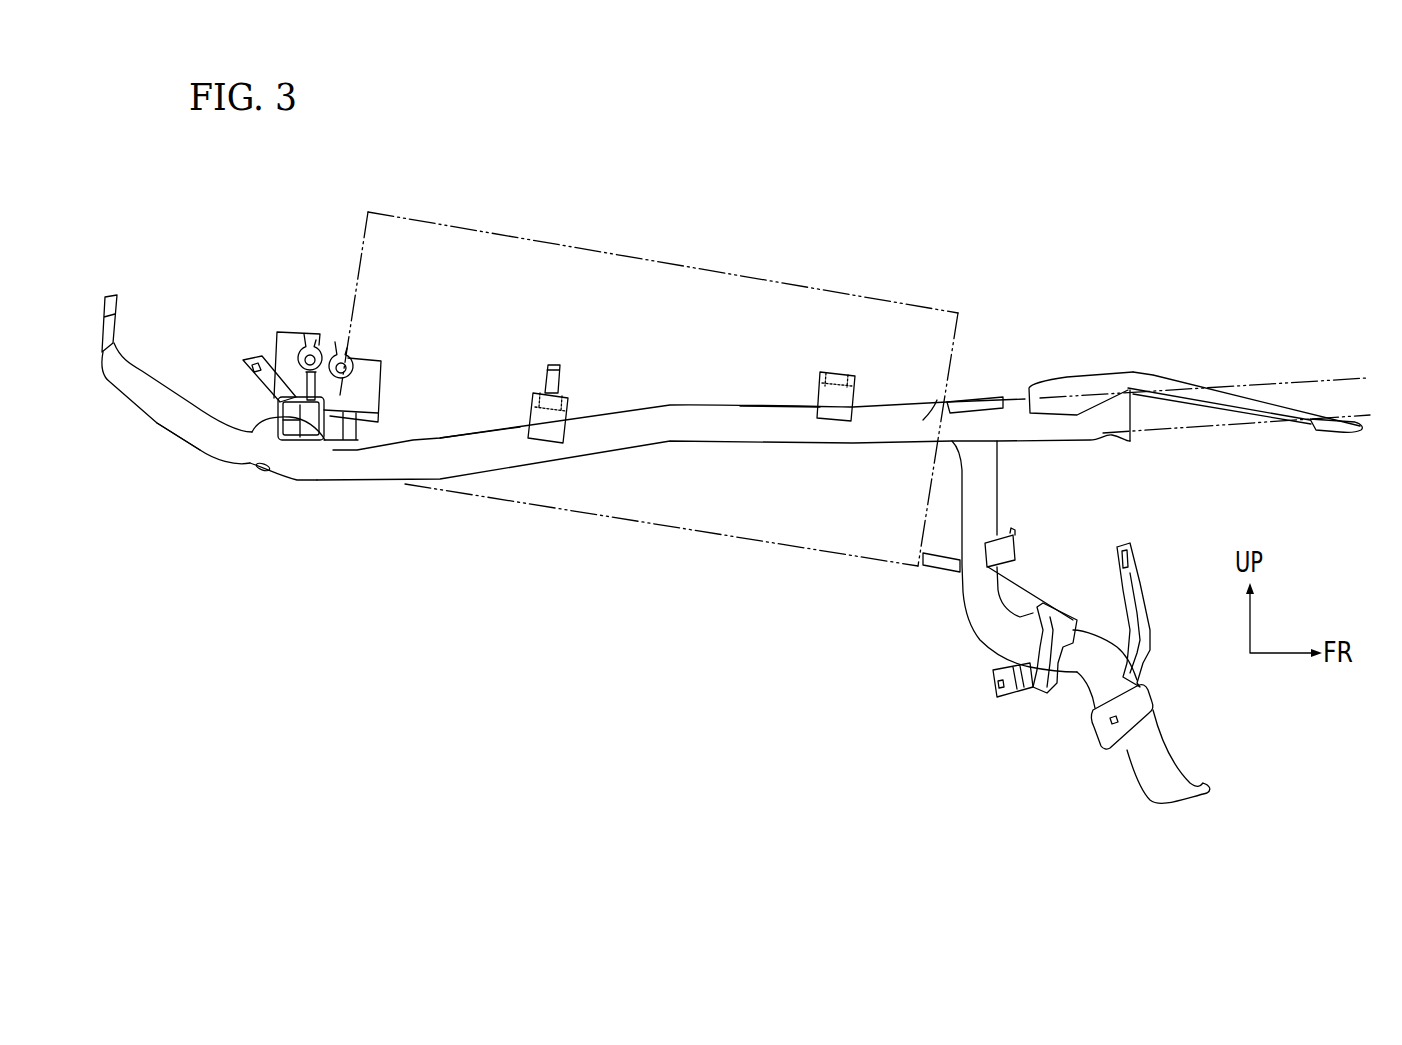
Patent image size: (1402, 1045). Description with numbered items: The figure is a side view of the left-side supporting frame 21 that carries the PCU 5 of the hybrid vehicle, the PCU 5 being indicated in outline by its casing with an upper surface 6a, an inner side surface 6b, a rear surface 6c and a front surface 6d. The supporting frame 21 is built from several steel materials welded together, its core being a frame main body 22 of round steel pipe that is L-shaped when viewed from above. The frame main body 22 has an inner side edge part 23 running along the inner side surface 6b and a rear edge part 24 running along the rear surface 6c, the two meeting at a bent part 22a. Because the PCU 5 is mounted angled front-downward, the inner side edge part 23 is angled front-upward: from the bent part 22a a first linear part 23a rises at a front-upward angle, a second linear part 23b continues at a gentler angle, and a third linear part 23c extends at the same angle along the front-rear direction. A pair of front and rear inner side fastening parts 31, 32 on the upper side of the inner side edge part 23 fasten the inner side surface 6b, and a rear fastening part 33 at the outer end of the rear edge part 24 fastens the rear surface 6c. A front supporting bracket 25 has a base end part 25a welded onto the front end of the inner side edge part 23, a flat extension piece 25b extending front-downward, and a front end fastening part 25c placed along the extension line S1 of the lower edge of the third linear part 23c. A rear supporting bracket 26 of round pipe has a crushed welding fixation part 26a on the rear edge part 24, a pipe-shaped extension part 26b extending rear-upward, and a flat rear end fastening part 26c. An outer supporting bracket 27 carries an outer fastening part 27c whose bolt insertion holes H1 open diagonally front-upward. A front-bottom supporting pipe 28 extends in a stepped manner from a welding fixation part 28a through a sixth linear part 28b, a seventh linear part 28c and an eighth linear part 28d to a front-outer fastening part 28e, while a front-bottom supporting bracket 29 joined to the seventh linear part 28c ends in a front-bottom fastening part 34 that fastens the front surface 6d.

The PCU 5 is at (658, 405).
The upper surface 6a is at (677, 265).
The inner side surface 6b is at (623, 510).
The rear surface 6c is at (365, 254).
The front surface 6d is at (957, 343).
The supporting frame 21 is at (1140, 507).
The frame main body 22 is at (613, 388).
The bent part 22a is at (313, 480).
The inner side edge part 23 is at (723, 406).
The first linear part 23a is at (470, 438).
The second linear part 23b is at (781, 410).
The third linear part 23c is at (925, 420).
The rear edge part 24 is at (311, 350).
The front supporting bracket 25 is at (1215, 368).
The base end part 25a is at (1063, 387).
The extension piece 25b is at (1220, 393).
The front end fastening part 25c is at (1355, 421).
The rear supporting bracket 26 is at (187, 388).
The welding fixation part 26a is at (277, 477).
The extension part 26b is at (162, 415).
The rear end fastening part 26c is at (106, 296).
The outer supporting bracket 27 is at (354, 341).
The outer fastening part 27c is at (283, 333).
The front-bottom supporting pipe 28 is at (1060, 553).
The welding fixation part 28a is at (1000, 397).
The sixth linear part 28b is at (987, 507).
The seventh linear part 28c is at (1040, 627).
The eighth linear part 28d is at (1137, 750).
The front-outer fastening part 28e is at (1200, 783).
The front-bottom supporting bracket 29 is at (1023, 573).
The front inner side fastening part 31 is at (850, 372).
The rear inner side fastening part 32 is at (567, 390).
The rear fastening part 33 is at (330, 410).
The front-bottom fastening part 34 is at (943, 552).
The bolt insertion hole H1 is at (328, 333).
The extension line S1 is at (1225, 427).